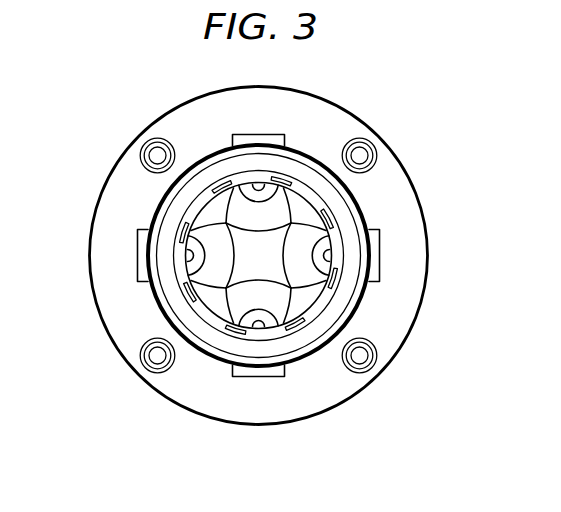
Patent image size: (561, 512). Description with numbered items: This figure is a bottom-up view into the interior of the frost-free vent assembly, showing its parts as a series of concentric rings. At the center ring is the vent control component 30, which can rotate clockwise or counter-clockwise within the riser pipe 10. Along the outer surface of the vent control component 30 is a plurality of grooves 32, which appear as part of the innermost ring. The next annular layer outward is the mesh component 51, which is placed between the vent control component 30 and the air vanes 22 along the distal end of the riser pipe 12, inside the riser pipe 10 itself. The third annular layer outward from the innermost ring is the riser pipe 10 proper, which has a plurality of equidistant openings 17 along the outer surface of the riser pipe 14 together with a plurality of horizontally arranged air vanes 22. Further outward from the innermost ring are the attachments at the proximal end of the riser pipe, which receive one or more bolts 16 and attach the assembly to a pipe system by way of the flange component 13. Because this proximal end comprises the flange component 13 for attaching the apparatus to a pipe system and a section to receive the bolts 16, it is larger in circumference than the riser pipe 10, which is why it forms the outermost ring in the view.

The riser pipe 10 is at (325, 358).
The distal end of the riser pipe 12 is at (285, 173).
The flange component 13 is at (123, 209).
The outer surface of the riser pipe 14 is at (205, 358).
The bolts 16 is at (142, 357).
The equidistant openings 17 is at (283, 372).
The air vanes 22 is at (256, 373).
The vent control component 30 is at (305, 215).
The grooves 32 is at (327, 250).
The mesh component 51 is at (338, 279).